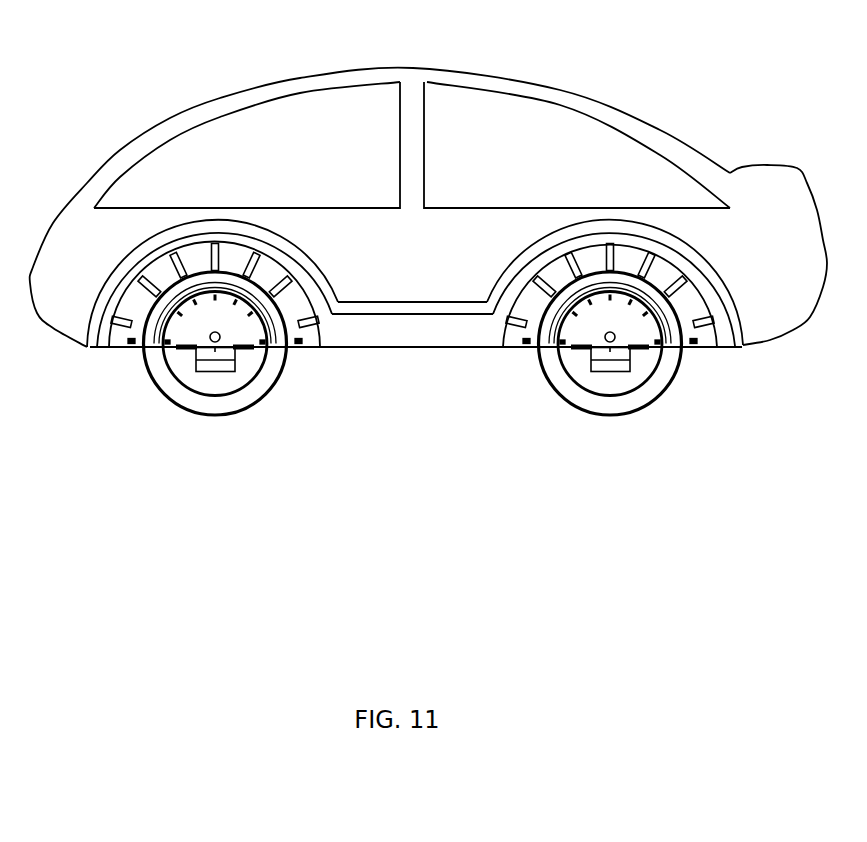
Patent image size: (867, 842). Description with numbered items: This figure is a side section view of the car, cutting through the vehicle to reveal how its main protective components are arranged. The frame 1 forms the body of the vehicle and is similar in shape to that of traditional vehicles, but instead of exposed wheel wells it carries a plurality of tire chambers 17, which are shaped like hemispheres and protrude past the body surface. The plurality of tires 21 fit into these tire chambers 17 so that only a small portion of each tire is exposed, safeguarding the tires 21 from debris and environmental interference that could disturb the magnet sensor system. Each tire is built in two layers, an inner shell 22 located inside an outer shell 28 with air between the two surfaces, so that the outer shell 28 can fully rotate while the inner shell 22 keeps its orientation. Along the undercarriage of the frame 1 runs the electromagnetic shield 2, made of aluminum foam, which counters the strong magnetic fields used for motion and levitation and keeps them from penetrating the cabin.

The frame 1 is at (428, 215).
The electromagnetic shield 2 is at (368, 307).
The tire chambers 17 is at (113, 335).
The tires 21 is at (217, 360).
The inner shell 22 is at (270, 367).
The outer shell 28 is at (146, 362).